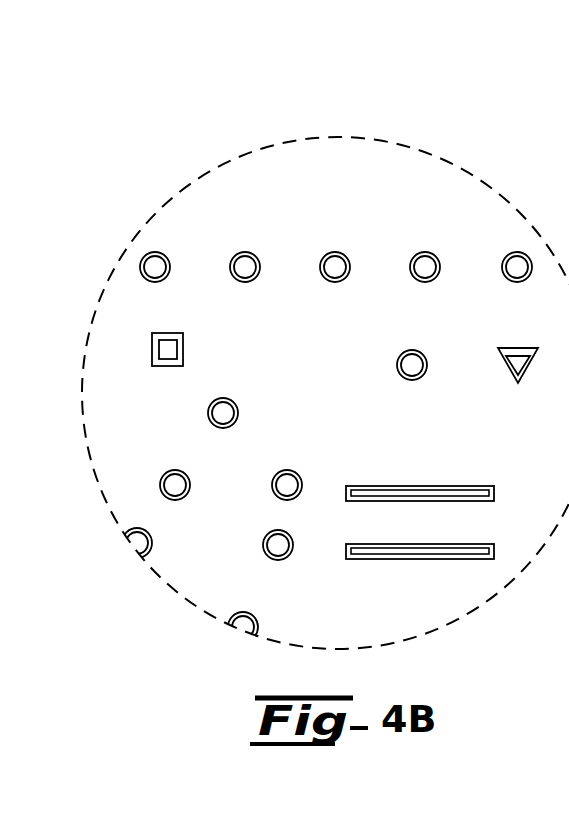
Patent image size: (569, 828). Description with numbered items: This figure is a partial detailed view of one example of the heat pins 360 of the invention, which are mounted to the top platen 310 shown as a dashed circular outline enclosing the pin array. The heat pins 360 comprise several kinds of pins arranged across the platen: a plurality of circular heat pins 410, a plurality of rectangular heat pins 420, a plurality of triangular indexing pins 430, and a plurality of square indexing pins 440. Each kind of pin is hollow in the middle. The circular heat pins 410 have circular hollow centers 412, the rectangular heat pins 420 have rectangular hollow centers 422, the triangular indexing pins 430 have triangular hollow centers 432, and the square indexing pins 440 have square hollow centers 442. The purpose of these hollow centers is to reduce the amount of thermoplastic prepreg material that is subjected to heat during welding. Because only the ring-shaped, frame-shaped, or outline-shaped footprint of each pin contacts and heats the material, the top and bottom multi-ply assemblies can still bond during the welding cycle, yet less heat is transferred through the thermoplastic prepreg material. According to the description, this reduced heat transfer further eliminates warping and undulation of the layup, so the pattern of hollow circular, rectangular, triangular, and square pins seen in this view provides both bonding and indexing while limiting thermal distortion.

The top platen 310 is at (404, 168).
The heat pins 360 is at (272, 210).
The circular heat pins 410 is at (333, 250).
The circular hollow centers 412 is at (423, 256).
The rectangular heat pins 420 is at (412, 457).
The rectangular hollow centers 422 is at (424, 490).
The triangular indexing pins 430 is at (504, 363).
The triangular hollow centers 432 is at (518, 358).
The square indexing pins 440 is at (217, 317).
The square hollow centers 442 is at (168, 348).